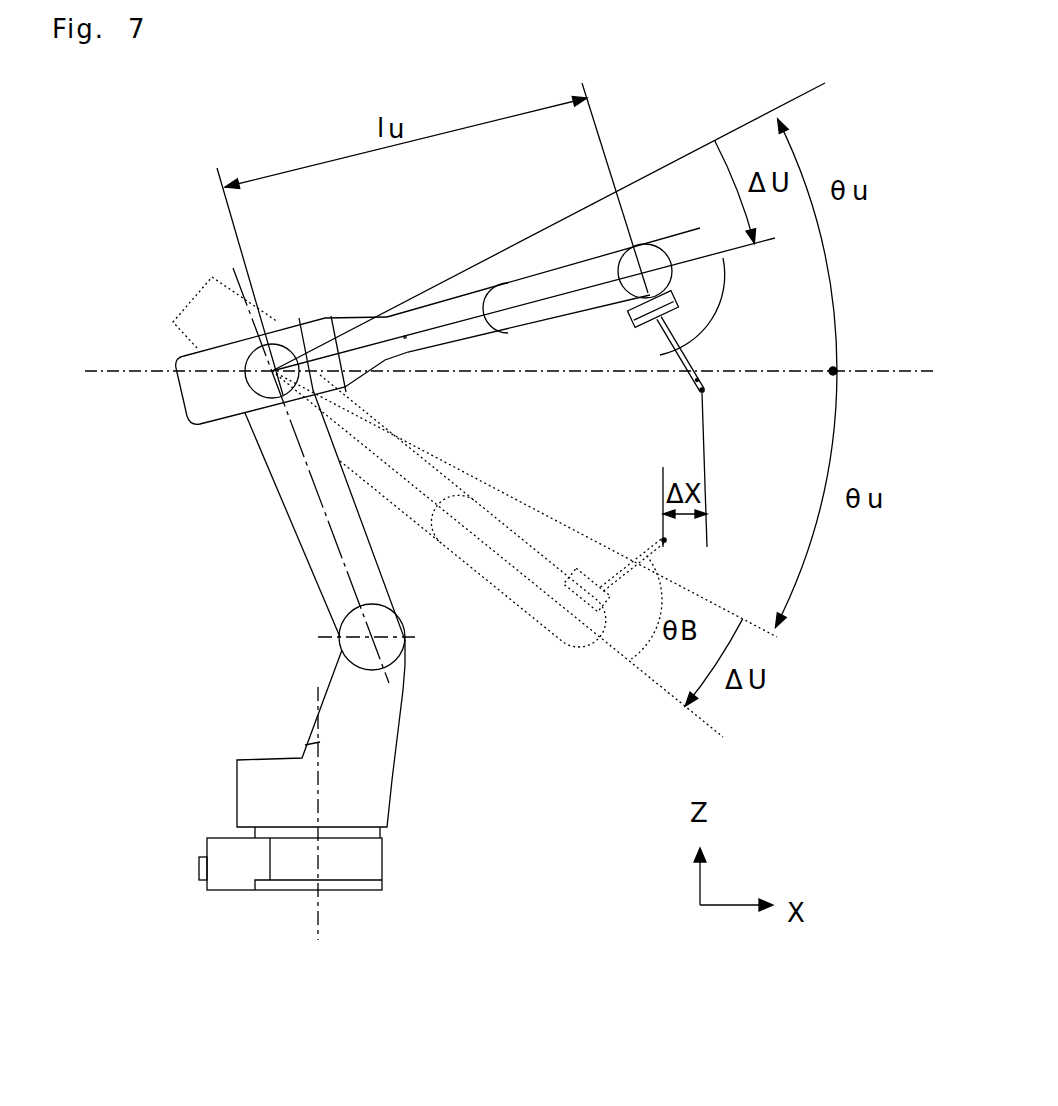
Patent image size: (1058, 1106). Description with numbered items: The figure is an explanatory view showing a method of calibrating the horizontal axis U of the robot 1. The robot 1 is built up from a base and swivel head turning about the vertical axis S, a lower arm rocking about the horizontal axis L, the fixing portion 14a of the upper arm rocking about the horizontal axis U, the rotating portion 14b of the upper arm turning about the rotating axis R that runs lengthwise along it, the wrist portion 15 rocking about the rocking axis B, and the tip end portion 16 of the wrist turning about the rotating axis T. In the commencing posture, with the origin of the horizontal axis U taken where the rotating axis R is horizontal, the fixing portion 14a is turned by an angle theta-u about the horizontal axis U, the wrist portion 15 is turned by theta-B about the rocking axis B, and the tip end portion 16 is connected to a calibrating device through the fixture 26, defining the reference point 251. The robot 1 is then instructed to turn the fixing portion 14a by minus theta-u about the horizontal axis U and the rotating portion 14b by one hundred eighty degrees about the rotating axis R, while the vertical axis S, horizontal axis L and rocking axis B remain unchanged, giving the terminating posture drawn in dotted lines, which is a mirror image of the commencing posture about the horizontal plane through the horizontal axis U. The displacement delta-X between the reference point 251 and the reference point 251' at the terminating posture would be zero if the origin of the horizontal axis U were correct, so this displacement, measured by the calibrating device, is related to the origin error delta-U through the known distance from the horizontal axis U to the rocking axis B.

The robot 1 is at (393, 782).
The fixing portion of the upper arm 14a is at (218, 415).
The rotating portion of the upper arm 14b is at (500, 290).
The wrist portion 15 is at (628, 312).
The tip end portion of the wrist 16 is at (672, 298).
The fixture 26 is at (696, 381).
The reference point 251 is at (762, 467).
The reference point at the terminating posture 251' is at (593, 527).
The horizontal axis U is at (272, 370).
The rotating axis R is at (405, 337).
The rocking axis B is at (633, 275).
The rotating axis T is at (670, 328).
The horizontal axis L is at (385, 652).
The vertical axis S is at (318, 740).